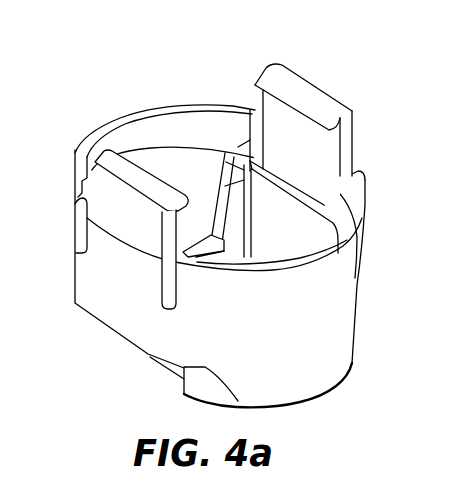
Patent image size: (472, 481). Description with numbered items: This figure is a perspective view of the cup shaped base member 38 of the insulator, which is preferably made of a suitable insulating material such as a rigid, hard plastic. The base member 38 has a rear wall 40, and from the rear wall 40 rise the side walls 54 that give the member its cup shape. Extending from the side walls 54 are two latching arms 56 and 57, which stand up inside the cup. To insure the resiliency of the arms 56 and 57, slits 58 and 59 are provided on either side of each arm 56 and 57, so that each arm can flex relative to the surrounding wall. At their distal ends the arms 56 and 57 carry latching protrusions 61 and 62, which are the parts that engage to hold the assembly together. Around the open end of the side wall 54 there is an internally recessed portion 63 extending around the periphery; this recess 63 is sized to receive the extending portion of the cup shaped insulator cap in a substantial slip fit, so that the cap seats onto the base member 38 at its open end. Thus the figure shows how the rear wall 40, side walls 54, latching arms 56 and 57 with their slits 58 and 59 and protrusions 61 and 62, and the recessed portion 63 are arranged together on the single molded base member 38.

The cup shaped base member 38 is at (97, 320).
The rear wall 40 is at (410, 478).
The side walls 54 is at (366, 198).
The latching arm 56 is at (104, 205).
The latching arm 57 is at (340, 119).
The slit 58 is at (246, 144).
The slit 59 is at (163, 293).
The latching protrusion 61 is at (311, 108).
The latching protrusion 62 is at (113, 165).
The internally recessed portion 63 is at (147, 128).